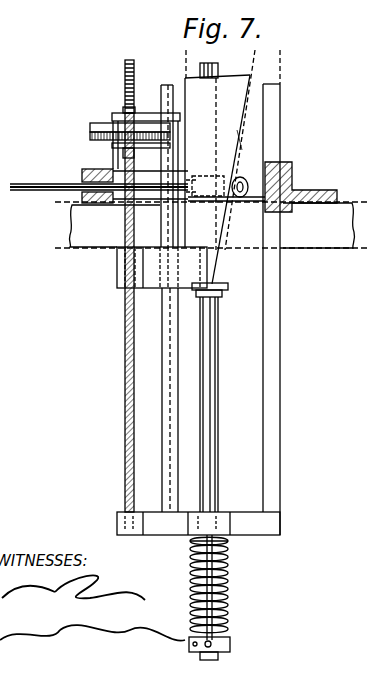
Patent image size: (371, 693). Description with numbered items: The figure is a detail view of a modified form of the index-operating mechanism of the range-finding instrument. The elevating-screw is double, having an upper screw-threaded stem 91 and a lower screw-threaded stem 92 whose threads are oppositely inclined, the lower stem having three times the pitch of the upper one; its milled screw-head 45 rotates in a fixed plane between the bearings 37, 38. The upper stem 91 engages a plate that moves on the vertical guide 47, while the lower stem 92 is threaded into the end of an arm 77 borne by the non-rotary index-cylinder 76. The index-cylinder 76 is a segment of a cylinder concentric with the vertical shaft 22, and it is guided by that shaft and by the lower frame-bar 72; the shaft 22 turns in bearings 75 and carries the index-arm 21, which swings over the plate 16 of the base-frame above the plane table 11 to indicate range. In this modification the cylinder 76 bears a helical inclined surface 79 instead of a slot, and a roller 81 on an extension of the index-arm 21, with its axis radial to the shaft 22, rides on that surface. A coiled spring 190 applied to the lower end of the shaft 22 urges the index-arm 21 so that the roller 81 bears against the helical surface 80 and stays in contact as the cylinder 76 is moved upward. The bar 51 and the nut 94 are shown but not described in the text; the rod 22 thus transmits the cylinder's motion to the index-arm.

The upper screw-threaded stem 91 is at (127, 72).
The lower screw-threaded stem 92 is at (125, 350).
The vertical guide 47 is at (159, 161).
The lower frame-bar 72 is at (164, 400).
The bearing 37 is at (114, 114).
The milled screw-head 45 is at (78, 132).
The bearing 38 is at (112, 145).
The index-arm 21 is at (96, 178).
The plane table 11 is at (211, 208).
The index-cylinder 76 is at (217, 150).
The inclined surface 79 is at (244, 105).
The helical surface 80 is at (241, 137).
The roller 81 is at (247, 182).
The plate 16 is at (312, 190).
The bar 51 is at (284, 292).
The arm 77 is at (162, 267).
The nut 94 is at (127, 292).
The vertical shaft 22 is at (216, 352).
The bearing 75 is at (220, 512).
The spring 190 is at (230, 592).